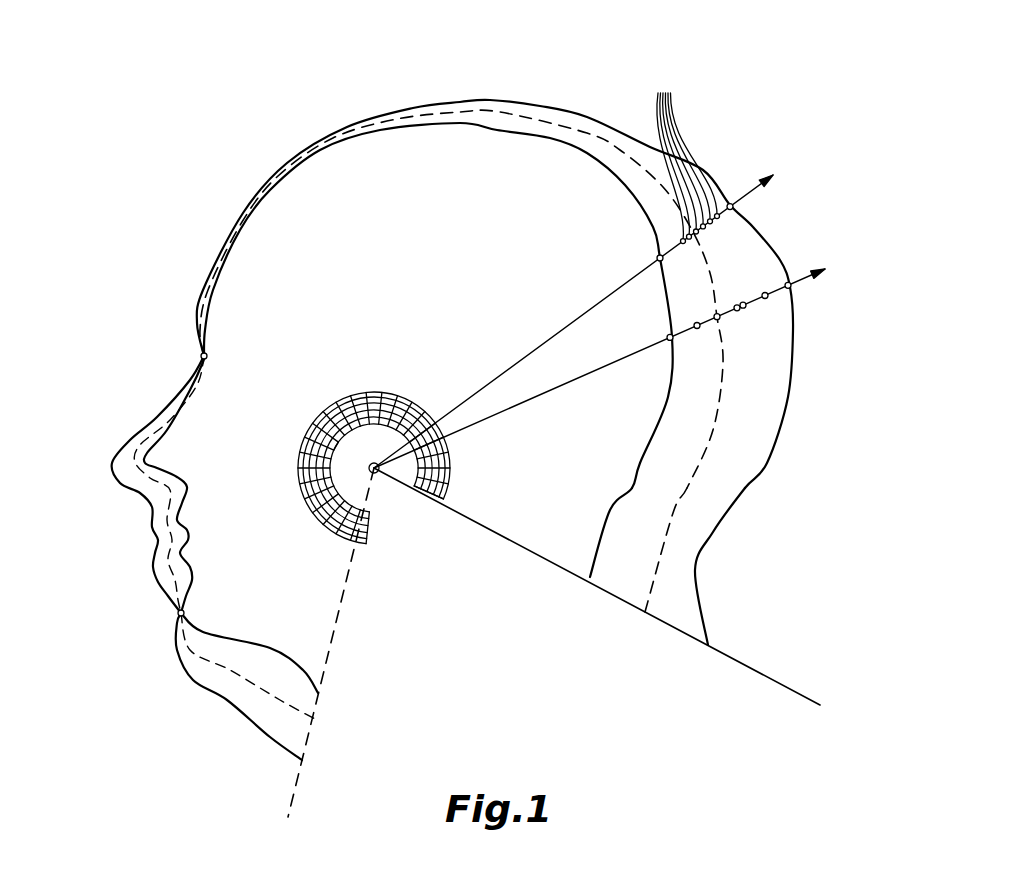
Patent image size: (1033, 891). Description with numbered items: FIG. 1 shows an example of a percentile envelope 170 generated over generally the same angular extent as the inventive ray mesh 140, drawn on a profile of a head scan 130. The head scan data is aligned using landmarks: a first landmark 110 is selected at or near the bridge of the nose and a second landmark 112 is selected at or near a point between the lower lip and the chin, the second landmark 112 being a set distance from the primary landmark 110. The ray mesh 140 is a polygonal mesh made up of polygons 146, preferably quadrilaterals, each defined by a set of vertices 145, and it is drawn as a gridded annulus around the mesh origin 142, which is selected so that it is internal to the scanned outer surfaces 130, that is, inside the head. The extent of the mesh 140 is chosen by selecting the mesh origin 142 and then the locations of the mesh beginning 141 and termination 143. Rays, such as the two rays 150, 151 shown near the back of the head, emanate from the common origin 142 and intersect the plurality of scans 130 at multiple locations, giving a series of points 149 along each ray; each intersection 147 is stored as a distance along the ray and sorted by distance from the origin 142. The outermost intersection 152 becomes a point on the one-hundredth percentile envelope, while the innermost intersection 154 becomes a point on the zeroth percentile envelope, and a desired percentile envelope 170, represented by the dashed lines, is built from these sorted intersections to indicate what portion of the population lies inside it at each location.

The first landmark 110 is at (204, 356).
The second landmark 112 is at (181, 613).
The scan 130 is at (492, 130).
The ray mesh 140 is at (375, 430).
The mesh beginning 141 is at (367, 534).
The mesh origin 142 is at (377, 473).
The mesh termination 143 is at (425, 505).
The vertex 145 is at (333, 410).
The polygon 146 is at (410, 403).
The intersection 147 is at (788, 283).
The points along the ray 149 is at (683, 158).
The first ray 150 is at (742, 196).
The second ray 151 is at (800, 278).
The outermost intersection 152 is at (730, 203).
The innermost intersection 154 is at (660, 257).
The percentile envelope 170 is at (673, 513).